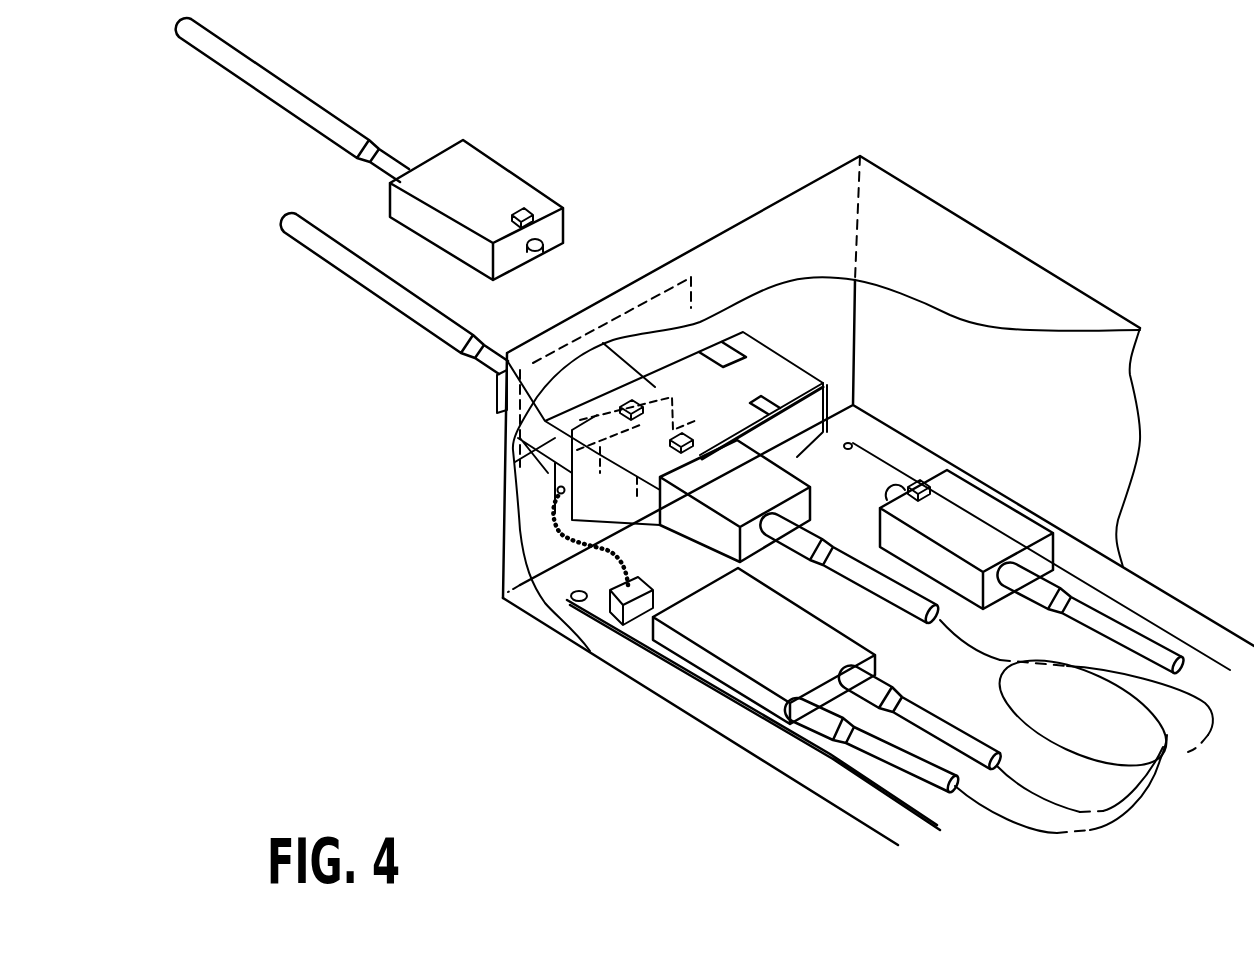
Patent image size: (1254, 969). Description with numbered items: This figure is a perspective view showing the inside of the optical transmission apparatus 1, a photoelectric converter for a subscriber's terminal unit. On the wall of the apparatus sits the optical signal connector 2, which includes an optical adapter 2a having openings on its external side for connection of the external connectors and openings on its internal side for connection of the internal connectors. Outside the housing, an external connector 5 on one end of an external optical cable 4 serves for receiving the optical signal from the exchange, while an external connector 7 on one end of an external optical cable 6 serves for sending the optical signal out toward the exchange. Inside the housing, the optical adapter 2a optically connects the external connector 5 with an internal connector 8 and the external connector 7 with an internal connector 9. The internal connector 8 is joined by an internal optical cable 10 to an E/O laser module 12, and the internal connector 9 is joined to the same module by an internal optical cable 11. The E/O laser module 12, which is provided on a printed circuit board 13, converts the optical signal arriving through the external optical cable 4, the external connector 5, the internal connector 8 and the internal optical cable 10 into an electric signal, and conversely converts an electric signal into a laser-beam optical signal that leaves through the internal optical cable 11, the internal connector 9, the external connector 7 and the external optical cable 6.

The optical transmission apparatus 1 is at (996, 254).
The optical signal connector 2 is at (690, 289).
The optical adapter 2a is at (770, 363).
The external optical cable 4 is at (322, 110).
The external connector 5 is at (490, 183).
The external optical cable 6 is at (360, 263).
The external connector 7 is at (497, 397).
The internal connector 8 is at (983, 515).
The internal connector 9 is at (808, 492).
The internal optical cable 10 is at (1140, 640).
The internal optical cable 11 is at (900, 597).
The E/O laser module 12 is at (757, 660).
The printed circuit board 13 is at (888, 778).